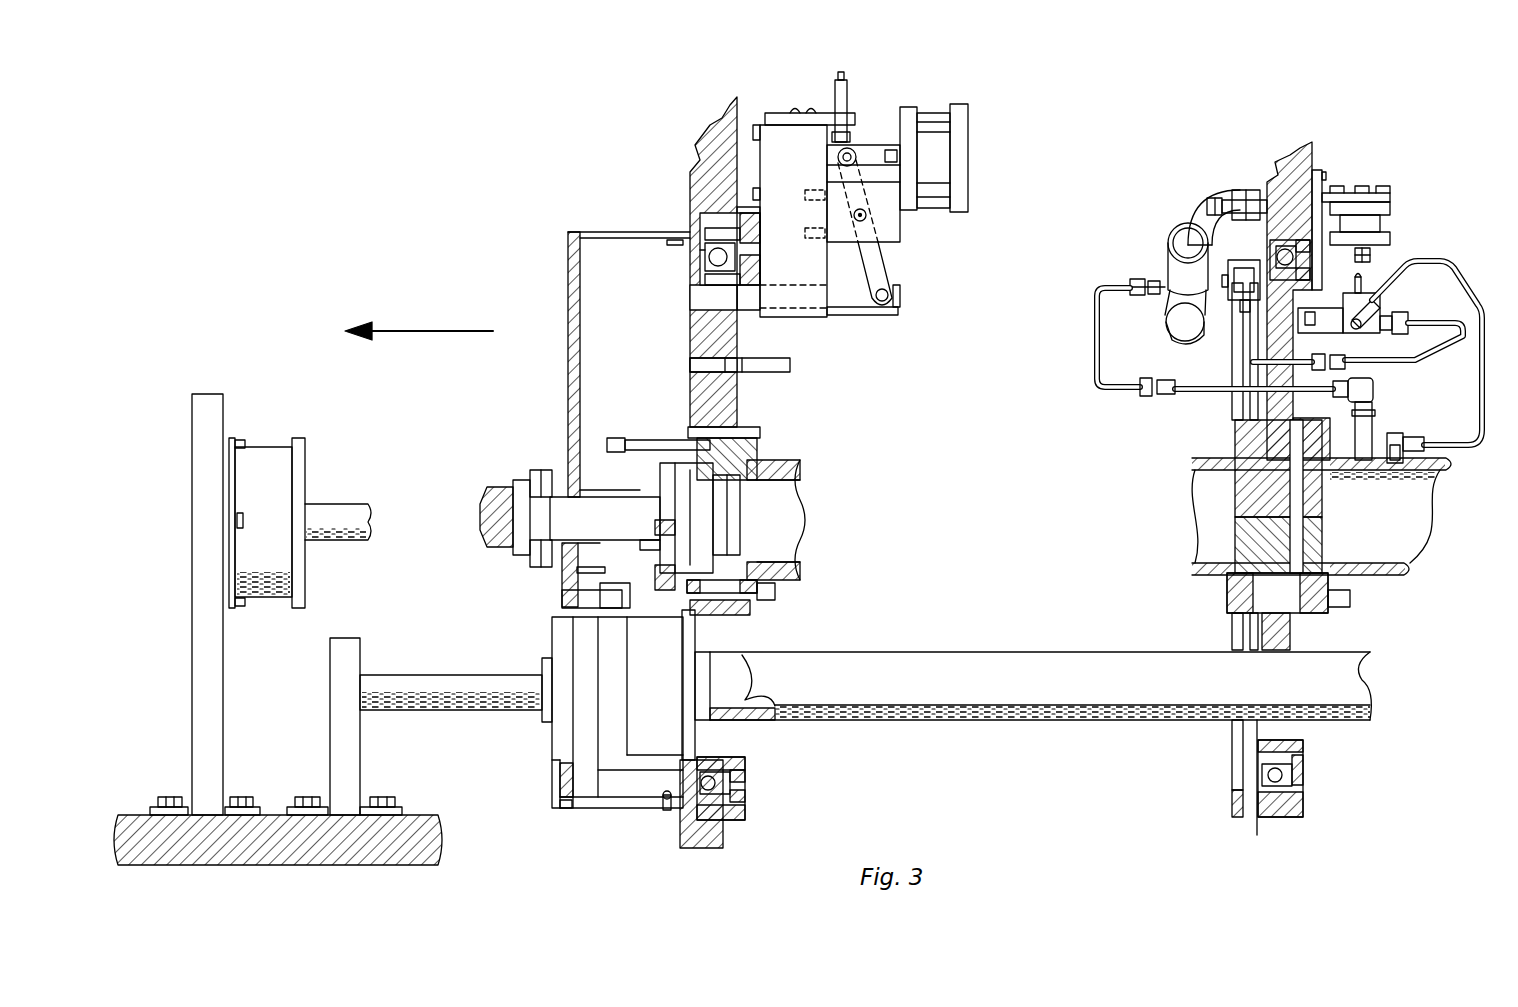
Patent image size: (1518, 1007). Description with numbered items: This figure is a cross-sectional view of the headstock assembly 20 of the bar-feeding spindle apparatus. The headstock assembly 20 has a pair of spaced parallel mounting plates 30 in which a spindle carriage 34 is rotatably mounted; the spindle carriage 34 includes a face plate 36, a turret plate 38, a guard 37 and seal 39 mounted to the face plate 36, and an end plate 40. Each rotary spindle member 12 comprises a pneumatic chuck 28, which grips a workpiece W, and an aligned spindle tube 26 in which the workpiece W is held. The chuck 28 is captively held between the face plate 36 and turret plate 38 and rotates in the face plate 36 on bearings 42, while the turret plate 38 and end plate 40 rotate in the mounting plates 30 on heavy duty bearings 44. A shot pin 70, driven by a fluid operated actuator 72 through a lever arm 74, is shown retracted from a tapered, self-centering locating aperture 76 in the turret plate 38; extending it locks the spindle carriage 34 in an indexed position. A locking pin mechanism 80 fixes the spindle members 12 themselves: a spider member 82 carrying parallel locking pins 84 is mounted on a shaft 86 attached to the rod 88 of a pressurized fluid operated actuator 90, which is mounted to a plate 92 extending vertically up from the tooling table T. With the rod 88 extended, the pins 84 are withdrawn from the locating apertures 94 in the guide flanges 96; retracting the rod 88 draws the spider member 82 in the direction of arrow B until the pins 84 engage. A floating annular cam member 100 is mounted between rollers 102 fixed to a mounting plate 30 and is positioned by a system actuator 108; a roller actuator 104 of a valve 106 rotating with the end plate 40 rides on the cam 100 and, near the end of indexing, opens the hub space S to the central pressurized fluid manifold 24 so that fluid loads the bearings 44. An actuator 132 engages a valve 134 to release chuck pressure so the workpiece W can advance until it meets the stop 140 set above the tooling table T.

The rotary spindle member 12 is at (448, 660).
The headstock assembly 20 is at (610, 170).
The pressurized fluid manifold 24 is at (1395, 575).
The spindle tube 26 is at (967, 655).
The pneumatic chuck 28 is at (545, 720).
The mounting plate 30 is at (718, 830).
The spindle carriage 34 is at (930, 519).
The face plate 36 is at (575, 290).
The guard 37 is at (585, 810).
The turret plate 38 is at (735, 385).
The seal 39 is at (665, 812).
The end plate 40 is at (1290, 620).
The bearing 42 is at (563, 607).
The heavy duty bearing 44 is at (703, 248).
The shot pin 70 is at (745, 305).
The fluid operated actuator 72 is at (960, 141).
The lever arm 74 is at (875, 260).
The locating aperture 76 is at (697, 292).
The locking pin mechanism 80 is at (530, 460).
The spider member 82 is at (665, 552).
The locking pin 84 is at (645, 585).
The shaft 86 is at (573, 515).
The rod 88 is at (330, 517).
The pressurized fluid operated actuator 90 is at (262, 460).
The plate 92 is at (205, 645).
The locating aperture 94 is at (590, 598).
The guide flange 96 is at (580, 770).
The floating annular cam member 100 is at (1222, 213).
The roller 102 is at (1250, 192).
The roller actuator 104 is at (1172, 245).
The valve 106 is at (1245, 300).
The system actuator 108 is at (1200, 193).
The actuator 132 is at (1380, 225).
The valve 134 is at (1348, 315).
The stop 140 is at (340, 698).
The action arrow B is at (410, 331).
The hub space S is at (1305, 520).
The tooling table T is at (385, 850).
The workpiece W is at (408, 698).